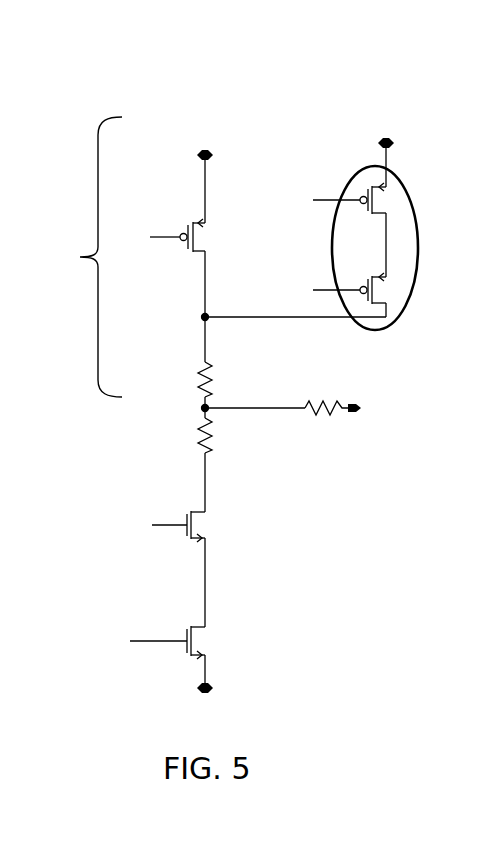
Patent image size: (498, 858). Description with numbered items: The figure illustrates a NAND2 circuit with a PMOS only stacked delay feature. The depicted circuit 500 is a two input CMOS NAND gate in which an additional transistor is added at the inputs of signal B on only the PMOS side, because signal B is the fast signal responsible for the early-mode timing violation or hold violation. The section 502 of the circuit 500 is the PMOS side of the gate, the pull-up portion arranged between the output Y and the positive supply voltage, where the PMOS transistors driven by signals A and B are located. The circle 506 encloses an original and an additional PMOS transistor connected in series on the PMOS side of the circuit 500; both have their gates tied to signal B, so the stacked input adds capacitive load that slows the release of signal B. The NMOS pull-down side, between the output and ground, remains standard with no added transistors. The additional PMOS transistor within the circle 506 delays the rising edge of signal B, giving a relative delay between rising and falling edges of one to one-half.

The circuit 500 is at (301, 86).
The section 502 is at (79, 257).
The circle 506 is at (410, 190).